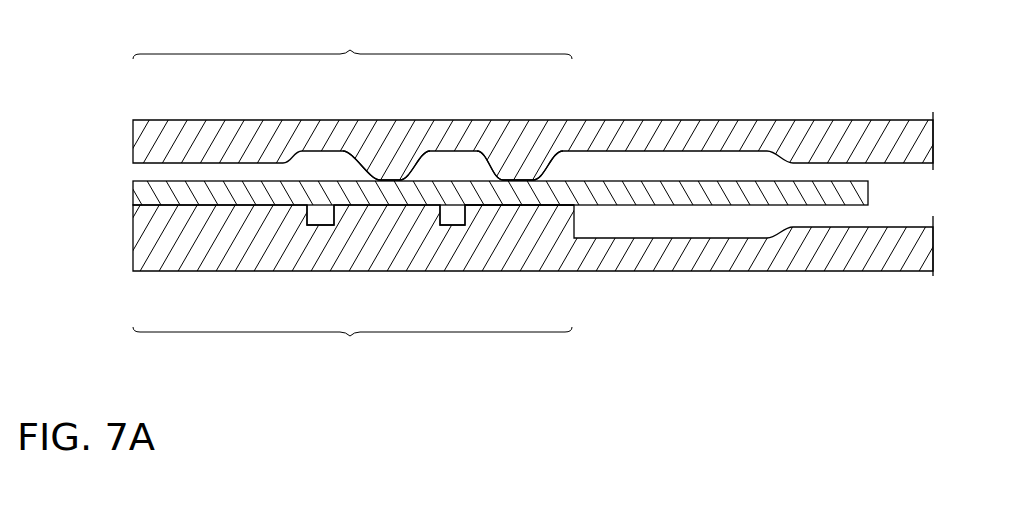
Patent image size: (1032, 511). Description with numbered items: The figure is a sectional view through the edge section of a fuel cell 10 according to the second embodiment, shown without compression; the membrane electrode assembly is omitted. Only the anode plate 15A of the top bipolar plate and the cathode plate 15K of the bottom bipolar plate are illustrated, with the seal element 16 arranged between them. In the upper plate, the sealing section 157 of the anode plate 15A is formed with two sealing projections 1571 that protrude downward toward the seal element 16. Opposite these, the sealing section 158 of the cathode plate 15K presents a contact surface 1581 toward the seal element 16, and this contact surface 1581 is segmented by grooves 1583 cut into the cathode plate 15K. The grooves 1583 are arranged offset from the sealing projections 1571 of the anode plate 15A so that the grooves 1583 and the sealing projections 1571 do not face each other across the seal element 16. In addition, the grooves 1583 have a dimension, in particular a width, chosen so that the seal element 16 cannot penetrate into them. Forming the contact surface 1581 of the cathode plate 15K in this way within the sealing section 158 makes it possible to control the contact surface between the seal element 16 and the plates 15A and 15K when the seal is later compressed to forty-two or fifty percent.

The fuel cell 10 is at (667, 95).
The anode plate 15A is at (148, 142).
The seal element 16 is at (148, 193).
The cathode plate 15K is at (148, 238).
The sealing section 157 is at (352, 39).
The sealing projection 1571 is at (390, 176).
The sealing section 158 is at (352, 350).
The groove 1583 is at (321, 225).
The contact surface 1581 is at (517, 206).